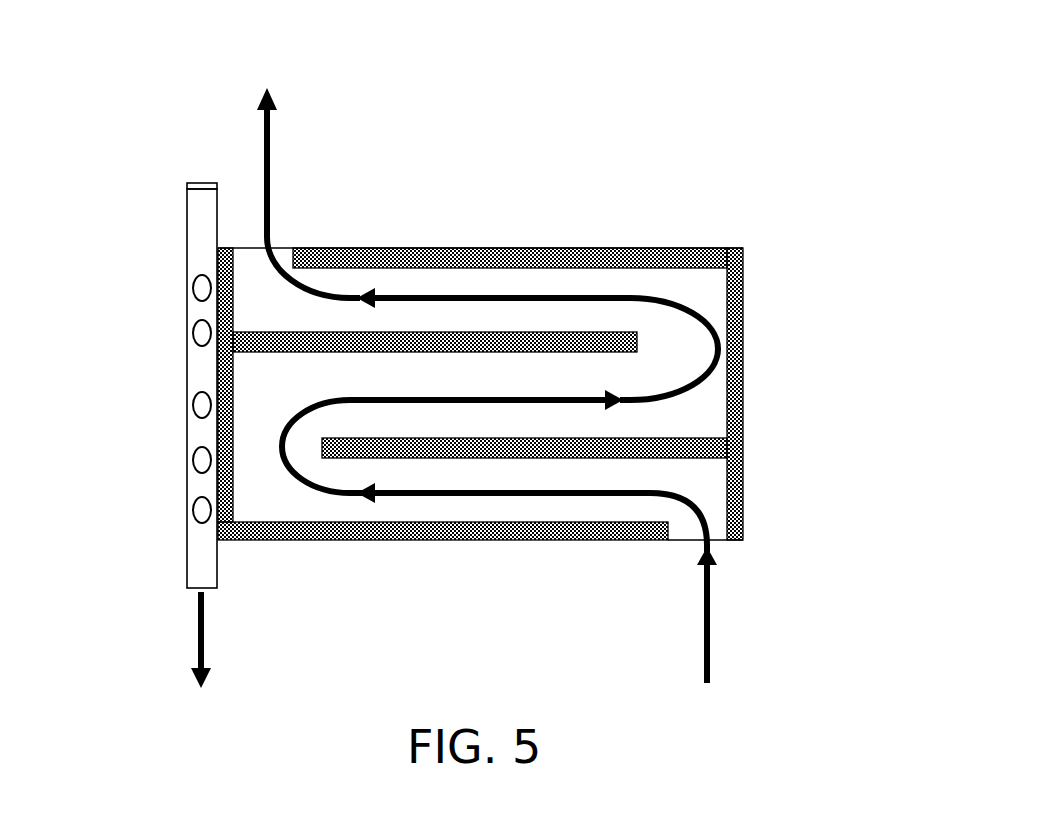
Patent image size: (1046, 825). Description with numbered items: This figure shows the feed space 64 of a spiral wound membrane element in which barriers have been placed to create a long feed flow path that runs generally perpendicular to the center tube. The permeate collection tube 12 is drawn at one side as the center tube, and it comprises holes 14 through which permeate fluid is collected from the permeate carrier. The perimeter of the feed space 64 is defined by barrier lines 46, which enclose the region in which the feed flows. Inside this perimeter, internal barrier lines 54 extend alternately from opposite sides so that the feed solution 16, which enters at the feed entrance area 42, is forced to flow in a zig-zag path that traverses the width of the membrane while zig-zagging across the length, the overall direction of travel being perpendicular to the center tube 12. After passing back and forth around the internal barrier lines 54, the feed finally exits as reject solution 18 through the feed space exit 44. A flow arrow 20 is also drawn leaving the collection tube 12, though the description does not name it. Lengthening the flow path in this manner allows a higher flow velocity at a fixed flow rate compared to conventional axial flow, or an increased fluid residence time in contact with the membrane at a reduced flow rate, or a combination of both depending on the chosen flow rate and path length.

The permeate collection tube 12 is at (187, 533).
The holes 14 is at (202, 288).
The feed solution 16 is at (710, 602).
The reject solution 18 is at (263, 193).
The outlet flow 20 is at (198, 637).
The feed entrance area 42 is at (687, 540).
The feed space exit 44 is at (280, 253).
The barrier lines 46 is at (407, 257).
The internal barrier lines 54 is at (545, 440).
The feed space 64 is at (456, 277).